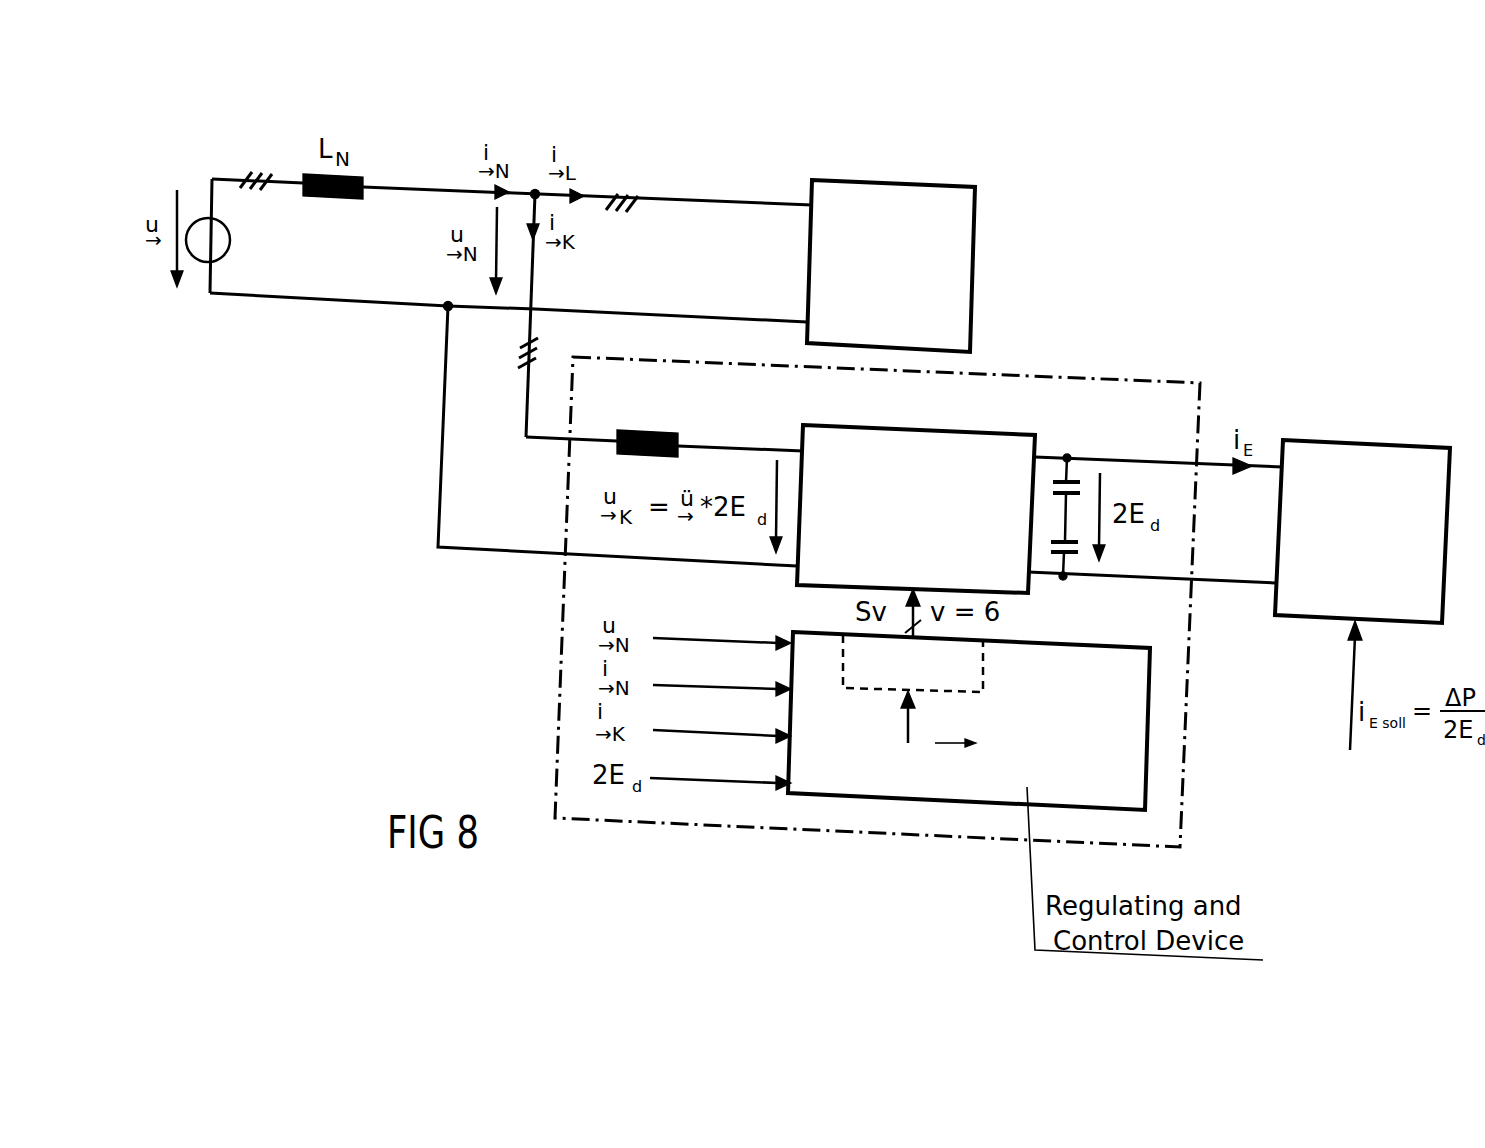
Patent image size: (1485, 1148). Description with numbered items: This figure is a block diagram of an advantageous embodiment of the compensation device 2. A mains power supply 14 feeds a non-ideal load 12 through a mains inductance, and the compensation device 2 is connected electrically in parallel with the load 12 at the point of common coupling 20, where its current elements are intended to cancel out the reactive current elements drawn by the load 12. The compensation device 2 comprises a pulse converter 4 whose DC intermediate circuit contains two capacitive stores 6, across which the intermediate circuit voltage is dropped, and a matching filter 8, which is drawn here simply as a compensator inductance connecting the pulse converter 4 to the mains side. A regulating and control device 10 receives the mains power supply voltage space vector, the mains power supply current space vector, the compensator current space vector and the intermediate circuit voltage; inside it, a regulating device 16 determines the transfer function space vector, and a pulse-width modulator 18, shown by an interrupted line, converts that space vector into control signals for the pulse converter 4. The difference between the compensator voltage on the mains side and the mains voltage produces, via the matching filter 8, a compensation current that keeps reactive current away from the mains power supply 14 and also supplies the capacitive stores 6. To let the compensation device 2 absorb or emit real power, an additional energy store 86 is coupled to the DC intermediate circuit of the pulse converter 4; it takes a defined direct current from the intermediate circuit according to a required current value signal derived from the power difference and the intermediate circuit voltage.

The mains power supply 14 is at (230, 240).
The point of common coupling 20 is at (535, 190).
The load 12 is at (975, 251).
The compensation device 2 is at (1110, 378).
The matching filter 8 is at (618, 430).
The pulse converter 4 is at (940, 430).
The capacitive store 6 is at (1080, 488).
The regulating and control device 10 is at (1100, 640).
The pulse-width modulator 18 is at (985, 672).
The regulating device 16 is at (1112, 740).
The energy store 86 is at (1368, 442).